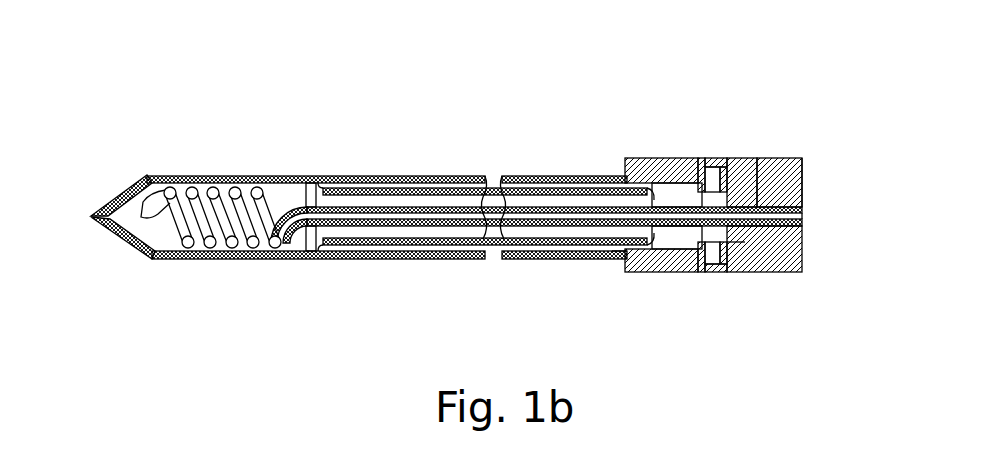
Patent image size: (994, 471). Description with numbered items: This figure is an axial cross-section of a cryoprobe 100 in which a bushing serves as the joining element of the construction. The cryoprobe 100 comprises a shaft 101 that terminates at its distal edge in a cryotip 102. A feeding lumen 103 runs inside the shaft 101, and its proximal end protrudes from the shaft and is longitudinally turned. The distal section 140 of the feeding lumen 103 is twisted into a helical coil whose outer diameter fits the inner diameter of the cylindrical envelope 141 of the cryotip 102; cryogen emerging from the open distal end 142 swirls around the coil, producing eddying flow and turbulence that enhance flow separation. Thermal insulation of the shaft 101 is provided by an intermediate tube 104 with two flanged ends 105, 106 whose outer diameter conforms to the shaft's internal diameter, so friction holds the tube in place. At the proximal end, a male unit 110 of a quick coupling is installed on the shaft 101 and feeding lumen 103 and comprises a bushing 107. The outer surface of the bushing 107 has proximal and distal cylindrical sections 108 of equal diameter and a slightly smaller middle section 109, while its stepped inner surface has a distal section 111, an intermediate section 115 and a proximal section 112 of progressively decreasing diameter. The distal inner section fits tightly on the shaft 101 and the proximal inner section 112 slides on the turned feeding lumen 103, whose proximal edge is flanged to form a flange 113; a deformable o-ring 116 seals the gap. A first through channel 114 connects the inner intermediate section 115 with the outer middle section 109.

The cryoprobe 100 is at (392, 155).
The shaft 101 is at (456, 176).
The cryotip 102 is at (178, 270).
The feeding lumen 103 is at (423, 228).
The intermediate tube 104 is at (600, 245).
The flanged end 105 is at (345, 176).
The flanged end 106 is at (618, 258).
The bushing 107 is at (775, 272).
The proximal and distal cylindrical sections 108 is at (773, 160).
The middle section 109 is at (703, 272).
The male unit 110 is at (685, 137).
The distal section 111 is at (670, 272).
The proximal section 112 is at (757, 160).
The flange 113 is at (803, 208).
The first through channel 114 is at (740, 160).
The intermediate section 115 is at (745, 272).
The deformable o-ring 116 is at (803, 221).
The distal section 140 is at (201, 176).
The cylindrical envelope 141 is at (237, 178).
The distal end 142 is at (105, 206).